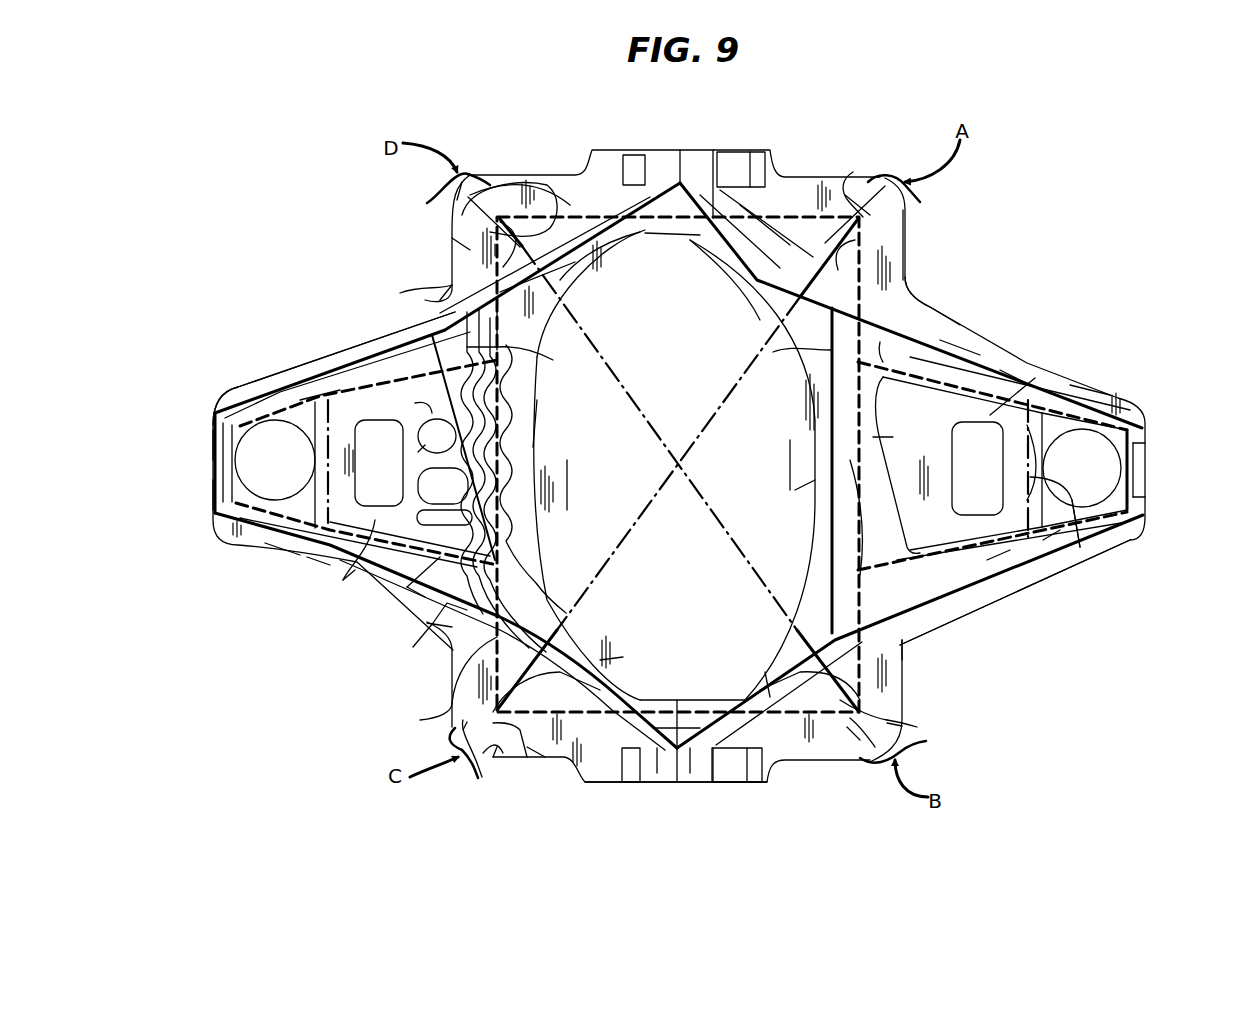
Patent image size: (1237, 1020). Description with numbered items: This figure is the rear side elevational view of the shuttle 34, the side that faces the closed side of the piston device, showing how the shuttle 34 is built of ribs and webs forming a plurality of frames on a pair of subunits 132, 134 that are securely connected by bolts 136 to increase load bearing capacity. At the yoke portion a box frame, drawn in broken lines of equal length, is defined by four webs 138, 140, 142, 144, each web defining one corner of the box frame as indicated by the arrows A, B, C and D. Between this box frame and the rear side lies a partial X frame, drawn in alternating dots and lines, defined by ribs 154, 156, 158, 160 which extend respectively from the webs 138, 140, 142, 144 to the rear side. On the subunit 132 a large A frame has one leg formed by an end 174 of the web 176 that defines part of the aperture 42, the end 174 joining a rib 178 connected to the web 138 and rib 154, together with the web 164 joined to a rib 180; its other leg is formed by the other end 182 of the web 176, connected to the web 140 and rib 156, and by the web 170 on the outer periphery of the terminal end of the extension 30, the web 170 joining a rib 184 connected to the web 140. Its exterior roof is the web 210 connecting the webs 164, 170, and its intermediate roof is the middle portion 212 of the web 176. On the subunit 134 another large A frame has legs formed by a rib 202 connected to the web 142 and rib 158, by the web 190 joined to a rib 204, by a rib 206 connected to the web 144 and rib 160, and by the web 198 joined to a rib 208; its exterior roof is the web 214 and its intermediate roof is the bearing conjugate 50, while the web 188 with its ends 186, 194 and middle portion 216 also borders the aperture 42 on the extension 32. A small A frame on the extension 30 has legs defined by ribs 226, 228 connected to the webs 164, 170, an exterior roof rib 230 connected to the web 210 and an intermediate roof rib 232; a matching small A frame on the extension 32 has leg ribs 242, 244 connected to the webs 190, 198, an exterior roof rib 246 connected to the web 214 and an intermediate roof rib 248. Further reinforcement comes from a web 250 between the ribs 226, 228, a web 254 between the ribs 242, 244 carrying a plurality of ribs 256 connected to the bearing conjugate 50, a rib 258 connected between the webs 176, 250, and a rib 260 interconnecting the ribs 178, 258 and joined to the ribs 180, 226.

The extension 30 is at (965, 598).
The extension 32 is at (335, 342).
The shuttle 34 is at (628, 805).
The aperture 42 is at (723, 770).
The bearing conjugate 50 is at (513, 343).
The subunit 132 is at (690, 773).
The subunit 134 is at (657, 773).
The bolt 136 is at (635, 165).
The web 138 is at (890, 222).
The web 140 is at (887, 723).
The web 142 is at (497, 747).
The web 144 is at (470, 217).
The rib 154 is at (866, 192).
The rib 156 is at (847, 727).
The rib 158 is at (527, 747).
The rib 160 is at (452, 238).
The web 164 is at (967, 347).
The web 170 is at (987, 560).
The end 174 is at (713, 257).
The web 176 is at (790, 465).
The rib 178 is at (770, 225).
The rib 180 is at (917, 307).
The end 182 is at (765, 672).
The rib 184 is at (917, 622).
The end 186 is at (623, 657).
The web 188 is at (567, 487).
The web 190 is at (407, 587).
The end 194 is at (577, 262).
The web 198 is at (240, 392).
The rib 202 is at (467, 722).
The rib 204 is at (427, 623).
The rib 206 is at (560, 227).
The rib 208 is at (440, 300).
The web 210 is at (1150, 485).
The middle portion 212 is at (795, 490).
The web 214 is at (213, 493).
The middle portion 216 is at (533, 447).
The rib 226 is at (1090, 382).
The rib 228 is at (1043, 540).
The rib 230 is at (1150, 447).
The rib 232 is at (1087, 555).
The rib 242 is at (307, 557).
The rib 244 is at (322, 400).
The rib 246 is at (213, 442).
The rib 248 is at (265, 543).
The web 250 is at (1033, 378).
The web 254 is at (343, 580).
The ribs 256 is at (418, 452).
The rib 258 is at (873, 437).
The rib 260 is at (773, 352).